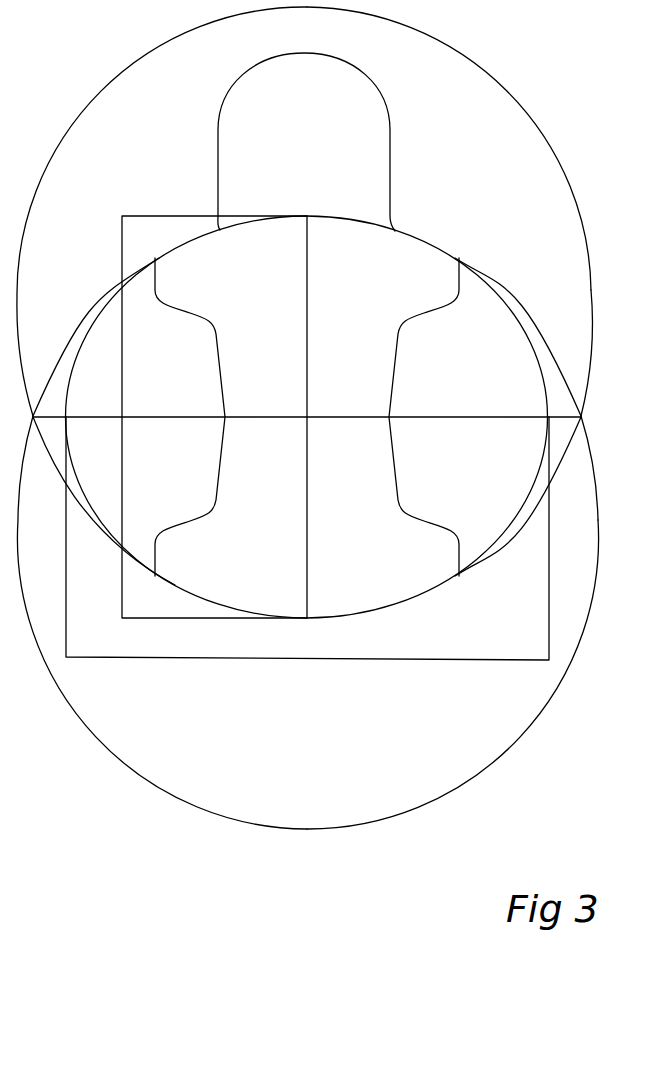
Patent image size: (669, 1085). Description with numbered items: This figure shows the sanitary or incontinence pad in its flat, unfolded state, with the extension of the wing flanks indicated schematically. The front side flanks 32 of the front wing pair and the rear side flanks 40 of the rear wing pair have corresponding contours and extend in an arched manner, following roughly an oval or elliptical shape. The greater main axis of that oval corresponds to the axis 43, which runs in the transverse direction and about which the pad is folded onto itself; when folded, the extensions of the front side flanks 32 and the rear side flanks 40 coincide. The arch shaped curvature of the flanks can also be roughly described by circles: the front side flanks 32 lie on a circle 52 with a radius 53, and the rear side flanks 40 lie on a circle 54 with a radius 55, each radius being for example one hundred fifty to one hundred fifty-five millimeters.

The front side flanks 32 is at (422, 233).
The rear side flank 40 is at (436, 598).
The axis 43 is at (460, 416).
The circle 52 is at (497, 89).
The radius 53 is at (462, 67).
The circle 54 is at (526, 733).
The radius 55 is at (468, 771).